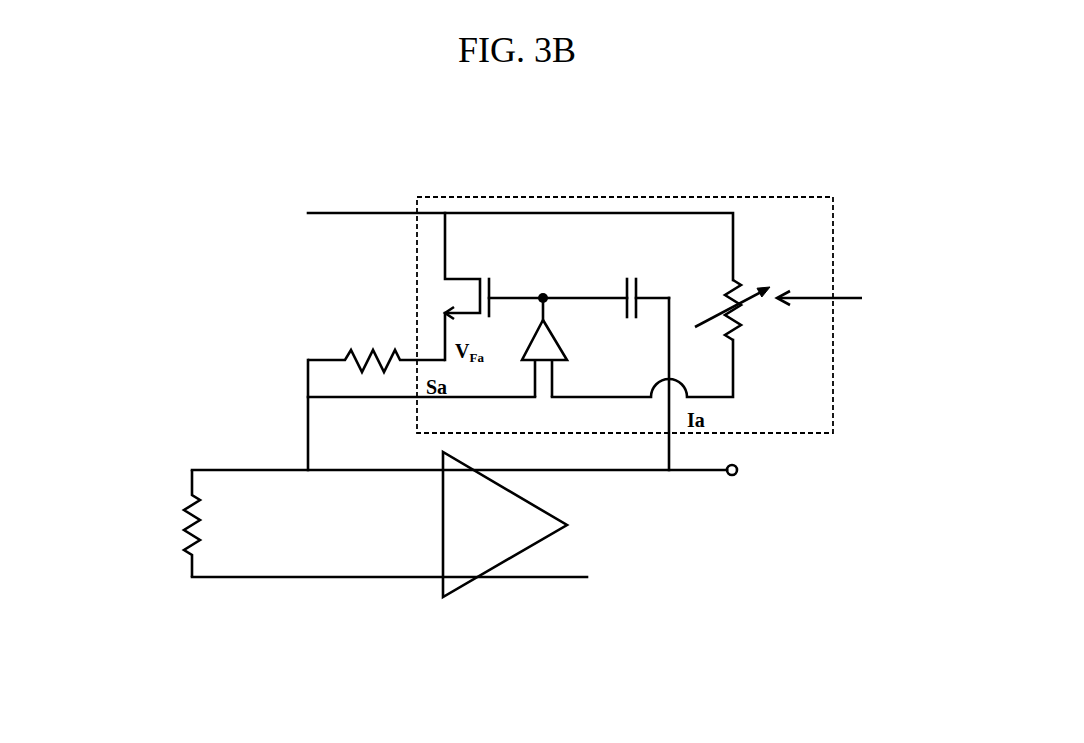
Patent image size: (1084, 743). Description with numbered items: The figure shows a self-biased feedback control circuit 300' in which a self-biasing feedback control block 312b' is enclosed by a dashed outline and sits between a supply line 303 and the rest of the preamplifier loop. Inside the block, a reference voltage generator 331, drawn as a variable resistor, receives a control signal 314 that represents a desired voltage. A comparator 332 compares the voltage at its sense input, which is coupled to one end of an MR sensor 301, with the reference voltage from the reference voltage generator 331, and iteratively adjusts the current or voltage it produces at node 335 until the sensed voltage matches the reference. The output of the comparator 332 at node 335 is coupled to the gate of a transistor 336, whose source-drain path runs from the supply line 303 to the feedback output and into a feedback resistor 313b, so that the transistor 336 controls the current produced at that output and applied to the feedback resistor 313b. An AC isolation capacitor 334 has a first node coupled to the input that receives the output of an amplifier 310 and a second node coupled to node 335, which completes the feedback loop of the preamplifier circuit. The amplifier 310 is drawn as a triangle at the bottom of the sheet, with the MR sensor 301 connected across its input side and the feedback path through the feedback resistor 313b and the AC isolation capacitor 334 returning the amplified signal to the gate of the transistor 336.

The sensing circuit 300' is at (799, 112).
The front-end circuit 312b' is at (625, 293).
The VSS supply line 303 is at (520, 235).
The transistor 336 is at (457, 277).
The node 335 is at (545, 294).
The AC isolation capacitor 334 is at (629, 274).
The reference voltage generator 331 is at (718, 273).
The control signal 314 is at (841, 297).
The feedback resistor 313b is at (367, 343).
The comparator 332 is at (551, 336).
The MR sensor 301 is at (172, 510).
The amplifier 310 is at (548, 512).